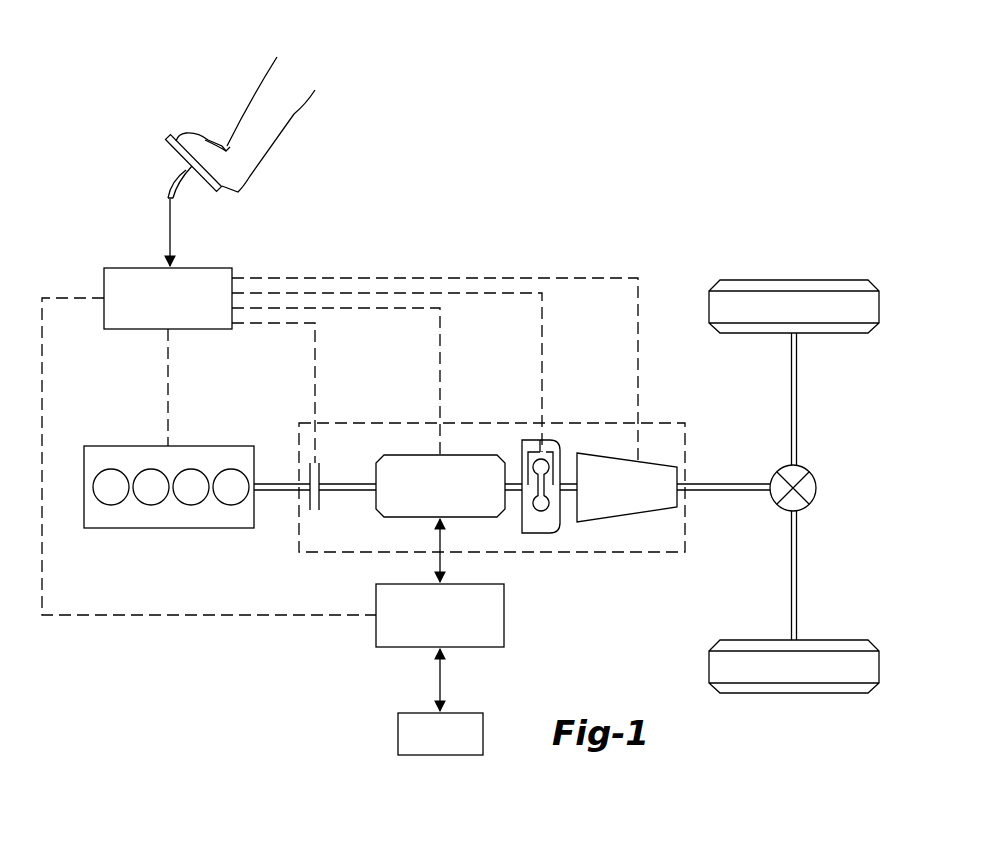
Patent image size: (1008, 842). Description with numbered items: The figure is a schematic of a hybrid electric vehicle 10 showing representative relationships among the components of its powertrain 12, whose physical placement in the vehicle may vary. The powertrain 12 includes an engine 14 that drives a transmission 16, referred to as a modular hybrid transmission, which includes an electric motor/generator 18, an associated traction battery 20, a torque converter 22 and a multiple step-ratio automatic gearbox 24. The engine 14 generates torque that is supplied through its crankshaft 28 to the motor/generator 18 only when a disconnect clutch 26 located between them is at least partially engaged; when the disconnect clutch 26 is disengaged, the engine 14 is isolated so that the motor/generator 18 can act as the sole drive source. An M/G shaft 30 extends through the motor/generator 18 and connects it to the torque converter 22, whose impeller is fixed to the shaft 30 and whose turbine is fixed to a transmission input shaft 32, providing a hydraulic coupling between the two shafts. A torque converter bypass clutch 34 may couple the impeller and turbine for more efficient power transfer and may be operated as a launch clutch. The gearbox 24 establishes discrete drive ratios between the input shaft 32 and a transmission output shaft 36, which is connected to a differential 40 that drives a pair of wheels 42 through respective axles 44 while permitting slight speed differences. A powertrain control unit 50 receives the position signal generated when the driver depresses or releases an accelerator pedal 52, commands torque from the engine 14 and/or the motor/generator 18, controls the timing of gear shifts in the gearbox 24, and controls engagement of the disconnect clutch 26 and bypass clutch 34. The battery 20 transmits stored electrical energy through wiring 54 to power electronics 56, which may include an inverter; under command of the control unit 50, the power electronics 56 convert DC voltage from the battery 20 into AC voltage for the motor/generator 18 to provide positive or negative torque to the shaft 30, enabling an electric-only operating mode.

The hybrid electric vehicle 10 is at (694, 210).
The powertrain 12 is at (250, 660).
The engine 14 is at (100, 446).
The transmission 16 is at (478, 418).
The electric motor/generator 18 is at (420, 455).
The traction battery 20 is at (398, 735).
The torque converter 22 is at (535, 533).
The gearbox 24 is at (620, 522).
The disconnect clutch 26 is at (313, 510).
The crankshaft 28 is at (280, 484).
The M/G shaft 30 is at (350, 484).
The transmission input shaft 32 is at (566, 484).
The torque converter bypass clutch 34 is at (546, 440).
The transmission output shaft 36 is at (737, 484).
The differential 40 is at (816, 488).
The wheels 42 is at (795, 280).
The axles 44 is at (797, 398).
The powertrain control unit 50 is at (116, 268).
The accelerator pedal 52 is at (167, 152).
The wiring 54 is at (438, 680).
The power electronics 56 is at (504, 615).